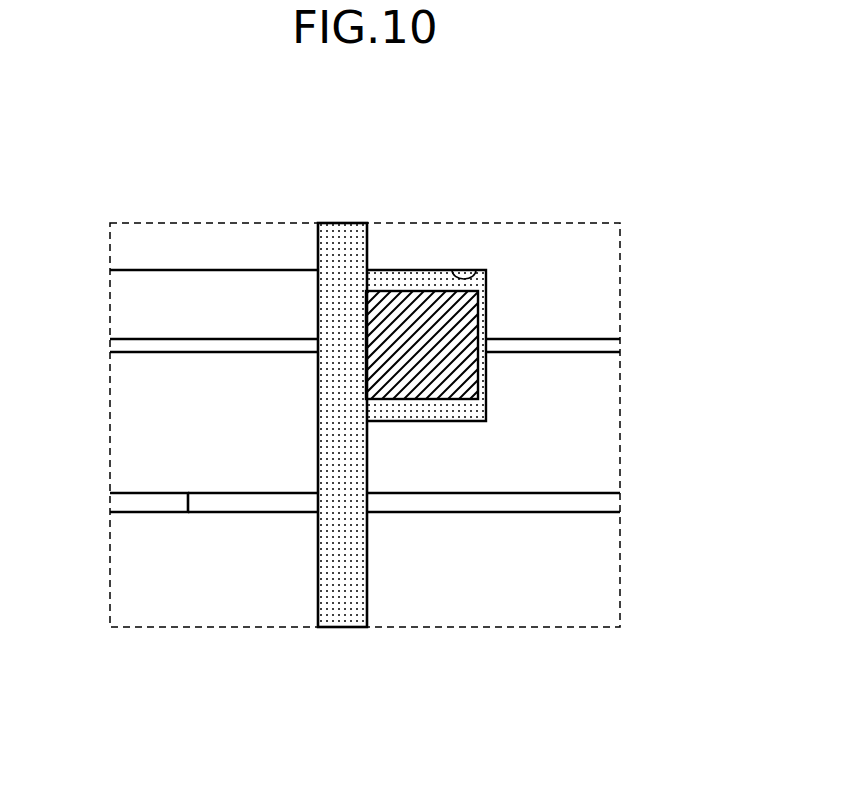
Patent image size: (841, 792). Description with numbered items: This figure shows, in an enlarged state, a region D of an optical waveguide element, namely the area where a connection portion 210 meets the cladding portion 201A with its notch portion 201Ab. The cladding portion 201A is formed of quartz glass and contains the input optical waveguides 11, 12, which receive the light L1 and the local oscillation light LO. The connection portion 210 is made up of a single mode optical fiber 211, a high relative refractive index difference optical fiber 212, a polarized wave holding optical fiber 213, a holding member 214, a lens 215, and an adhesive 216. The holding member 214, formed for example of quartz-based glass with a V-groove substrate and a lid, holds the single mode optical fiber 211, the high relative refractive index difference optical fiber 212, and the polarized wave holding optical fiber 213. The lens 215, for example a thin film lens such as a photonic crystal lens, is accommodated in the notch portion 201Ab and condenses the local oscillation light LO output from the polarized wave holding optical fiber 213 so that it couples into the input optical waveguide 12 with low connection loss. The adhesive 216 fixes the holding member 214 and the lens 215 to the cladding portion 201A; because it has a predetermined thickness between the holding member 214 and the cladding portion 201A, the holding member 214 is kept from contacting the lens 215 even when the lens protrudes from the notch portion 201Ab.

The connection portion 210 is at (324, 146).
The region D is at (145, 630).
The polarized wave holding optical fiber 213 is at (229, 339).
The input optical waveguide 12 is at (551, 339).
The lens 215 is at (388, 291).
The notch portion 201Ab is at (476, 272).
The adhesive 216 is at (340, 614).
The single mode optical fiber 211 is at (163, 498).
The high relative refractive index difference optical fiber 212 is at (253, 512).
The input optical waveguide 11 is at (562, 512).
The holding member 214 is at (120, 540).
The cladding portion 201A is at (605, 532).